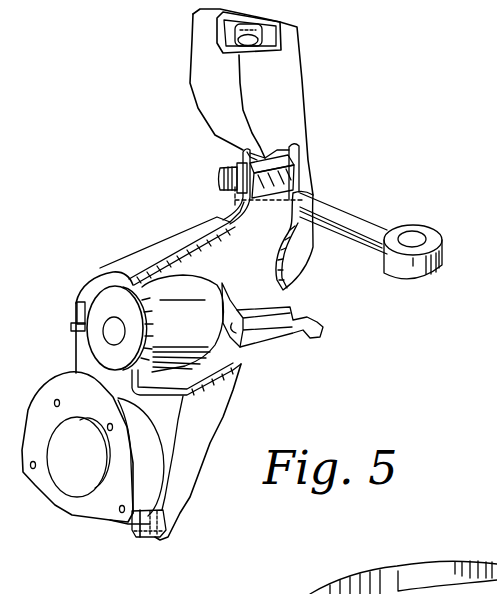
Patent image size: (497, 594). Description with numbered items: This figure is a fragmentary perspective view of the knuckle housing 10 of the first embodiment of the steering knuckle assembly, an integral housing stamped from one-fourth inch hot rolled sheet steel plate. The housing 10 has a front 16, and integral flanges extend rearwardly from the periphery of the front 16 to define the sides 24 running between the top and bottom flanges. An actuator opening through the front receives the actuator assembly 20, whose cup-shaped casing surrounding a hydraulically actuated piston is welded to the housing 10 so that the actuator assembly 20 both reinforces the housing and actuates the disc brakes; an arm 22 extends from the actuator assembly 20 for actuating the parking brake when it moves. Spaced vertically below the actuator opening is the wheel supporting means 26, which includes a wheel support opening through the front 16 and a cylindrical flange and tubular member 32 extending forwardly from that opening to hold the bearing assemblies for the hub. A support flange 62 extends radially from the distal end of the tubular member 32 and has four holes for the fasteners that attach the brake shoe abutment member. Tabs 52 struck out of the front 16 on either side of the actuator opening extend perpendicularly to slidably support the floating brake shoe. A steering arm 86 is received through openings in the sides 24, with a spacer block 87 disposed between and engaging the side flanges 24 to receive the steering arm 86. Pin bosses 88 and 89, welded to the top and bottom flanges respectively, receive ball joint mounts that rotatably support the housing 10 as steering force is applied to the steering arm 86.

The knuckle housing 10 is at (303, 65).
The front 16 is at (90, 278).
The actuator assembly 20 is at (191, 273).
The arm 22 is at (306, 316).
The sides 24 is at (293, 102).
The wheel supporting means 26 is at (93, 524).
The tubular member 32 is at (175, 452).
The tabs 52 is at (68, 327).
The support flange 62 is at (60, 373).
The steering arm 86 is at (370, 227).
The block 87 is at (282, 172).
The boss 88 is at (263, 33).
The boss 89 is at (147, 538).